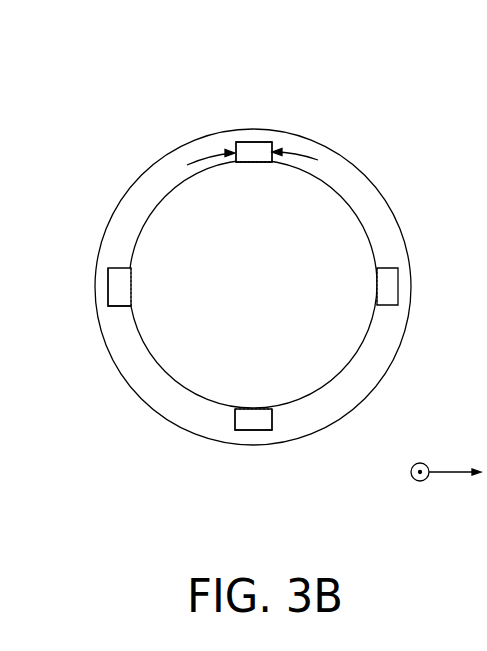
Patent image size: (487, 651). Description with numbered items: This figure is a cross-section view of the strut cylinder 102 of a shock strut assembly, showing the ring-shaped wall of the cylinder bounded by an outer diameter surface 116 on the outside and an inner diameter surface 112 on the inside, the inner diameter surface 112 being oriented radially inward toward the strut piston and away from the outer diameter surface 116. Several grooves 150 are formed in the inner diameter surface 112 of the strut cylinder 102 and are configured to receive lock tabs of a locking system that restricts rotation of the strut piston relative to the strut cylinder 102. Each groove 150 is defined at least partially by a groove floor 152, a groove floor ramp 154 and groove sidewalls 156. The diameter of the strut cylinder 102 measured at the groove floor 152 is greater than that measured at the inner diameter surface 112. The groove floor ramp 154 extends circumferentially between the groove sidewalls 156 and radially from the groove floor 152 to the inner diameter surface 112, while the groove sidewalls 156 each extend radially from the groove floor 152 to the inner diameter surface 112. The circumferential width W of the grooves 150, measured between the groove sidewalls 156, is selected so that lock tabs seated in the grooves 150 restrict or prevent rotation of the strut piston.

The strut cylinder 102 is at (102, 110).
The inner diameter surface 112 is at (345, 370).
The outer diameter surface 116 is at (363, 172).
The grooves 150 is at (239, 143).
The groove floor 152 is at (253, 152).
The groove floor ramp 154 is at (122, 286).
The groove sidewalls 156 is at (383, 302).